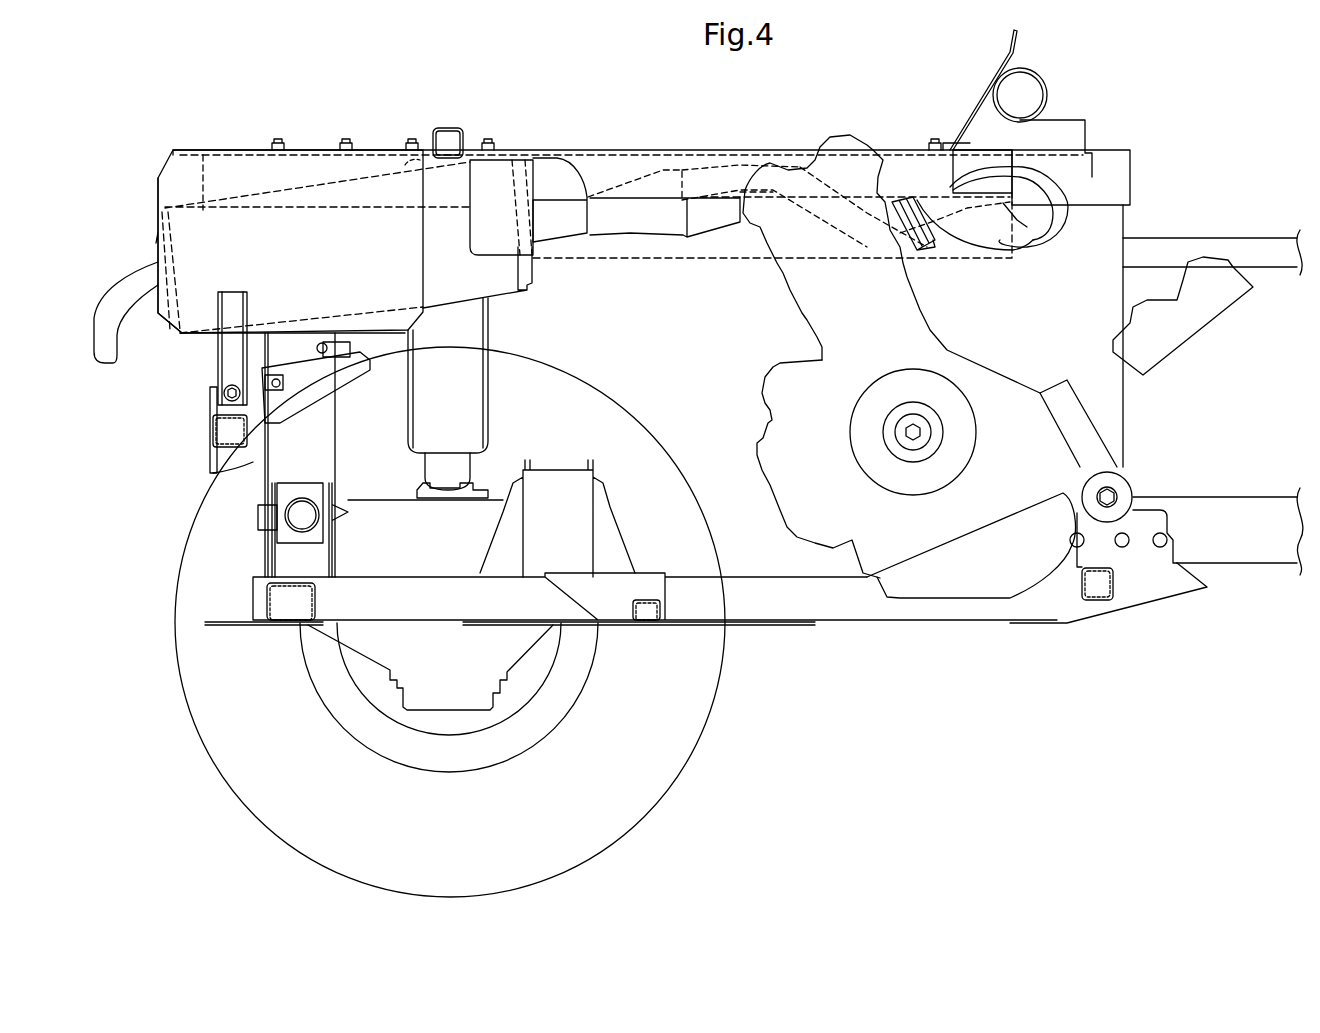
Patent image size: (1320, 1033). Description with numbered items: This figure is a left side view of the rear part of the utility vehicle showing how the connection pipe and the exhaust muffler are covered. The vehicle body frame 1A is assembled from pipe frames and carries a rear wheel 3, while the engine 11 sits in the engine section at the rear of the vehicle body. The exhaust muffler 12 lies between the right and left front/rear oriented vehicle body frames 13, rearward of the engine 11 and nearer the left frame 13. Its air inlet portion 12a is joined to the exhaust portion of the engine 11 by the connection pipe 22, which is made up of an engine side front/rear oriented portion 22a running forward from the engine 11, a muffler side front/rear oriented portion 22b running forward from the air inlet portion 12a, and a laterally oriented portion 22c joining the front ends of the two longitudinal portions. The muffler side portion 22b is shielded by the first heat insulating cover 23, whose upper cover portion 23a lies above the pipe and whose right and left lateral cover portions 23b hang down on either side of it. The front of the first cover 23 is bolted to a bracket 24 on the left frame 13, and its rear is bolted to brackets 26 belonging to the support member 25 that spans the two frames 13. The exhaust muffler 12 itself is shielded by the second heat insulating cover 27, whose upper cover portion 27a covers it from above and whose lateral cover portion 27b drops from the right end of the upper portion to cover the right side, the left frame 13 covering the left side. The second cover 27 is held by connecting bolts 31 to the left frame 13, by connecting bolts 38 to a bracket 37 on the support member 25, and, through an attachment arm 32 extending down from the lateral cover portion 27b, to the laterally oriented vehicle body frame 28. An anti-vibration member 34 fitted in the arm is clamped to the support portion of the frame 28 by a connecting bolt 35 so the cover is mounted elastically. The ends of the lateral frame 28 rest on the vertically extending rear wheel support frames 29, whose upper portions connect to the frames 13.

The vehicle body frame 1A is at (777, 626).
The rear wheel 3 is at (655, 804).
The engine 11 is at (777, 395).
The exhaust muffler 12 is at (302, 187).
The air inlet portion 12a is at (560, 240).
The front/rear oriented vehicle body frame 13 is at (203, 175).
The connection pipe 22 is at (740, 228).
The engine side front/rear oriented portion 22a is at (957, 213).
The muffler side front/rear oriented portion 22b is at (733, 205).
The laterally oriented portion 22c is at (1043, 217).
The first heat insulating cover 23 is at (613, 150).
The upper cover portion 23a is at (667, 150).
The lateral cover portion 23b is at (633, 247).
The bracket 24 is at (950, 142).
The support member 25 is at (449, 128).
The bracket 26 is at (505, 162).
The second heat insulating cover 27 is at (254, 190).
The upper cover portion 27a is at (222, 150).
The lateral cover portion 27b is at (182, 197).
The laterally oriented vehicle body frame 28 is at (212, 433).
The rear wheel support frame 29 is at (330, 425).
The connecting bolt 31 is at (278, 139).
The attachment arm 32 is at (227, 353).
The anti-vibration member 34 is at (215, 392).
The connecting bolt 35 is at (222, 401).
The bracket 37 is at (408, 165).
The connecting bolt 38 is at (412, 139).